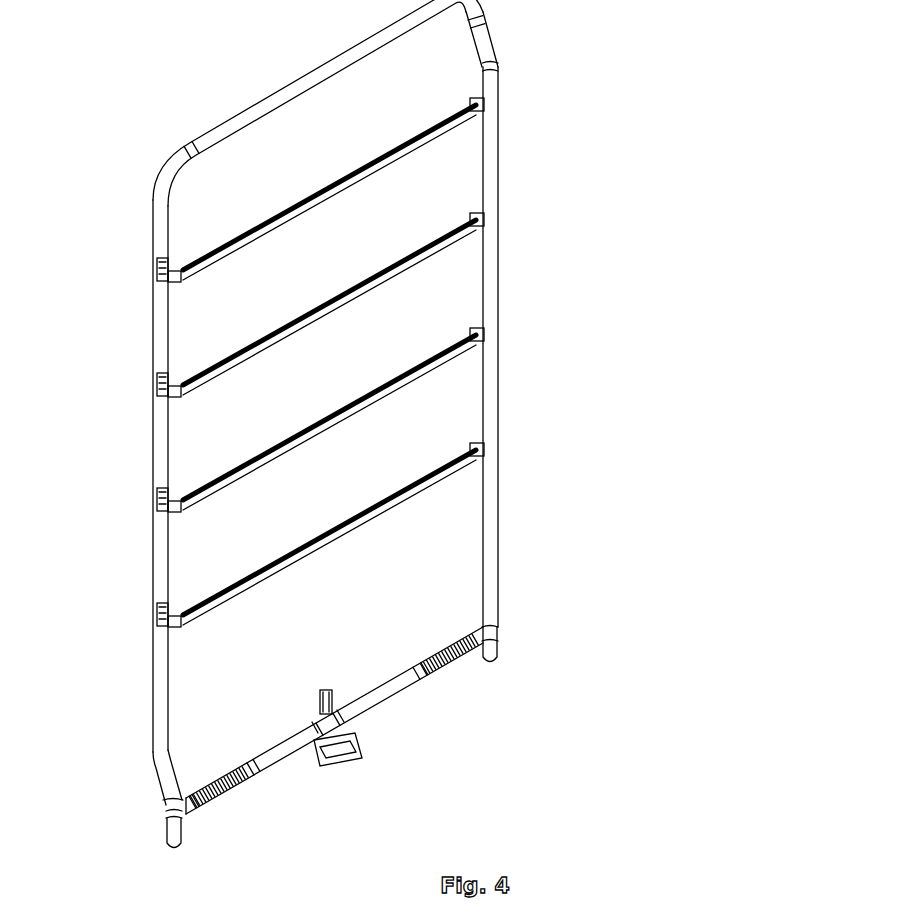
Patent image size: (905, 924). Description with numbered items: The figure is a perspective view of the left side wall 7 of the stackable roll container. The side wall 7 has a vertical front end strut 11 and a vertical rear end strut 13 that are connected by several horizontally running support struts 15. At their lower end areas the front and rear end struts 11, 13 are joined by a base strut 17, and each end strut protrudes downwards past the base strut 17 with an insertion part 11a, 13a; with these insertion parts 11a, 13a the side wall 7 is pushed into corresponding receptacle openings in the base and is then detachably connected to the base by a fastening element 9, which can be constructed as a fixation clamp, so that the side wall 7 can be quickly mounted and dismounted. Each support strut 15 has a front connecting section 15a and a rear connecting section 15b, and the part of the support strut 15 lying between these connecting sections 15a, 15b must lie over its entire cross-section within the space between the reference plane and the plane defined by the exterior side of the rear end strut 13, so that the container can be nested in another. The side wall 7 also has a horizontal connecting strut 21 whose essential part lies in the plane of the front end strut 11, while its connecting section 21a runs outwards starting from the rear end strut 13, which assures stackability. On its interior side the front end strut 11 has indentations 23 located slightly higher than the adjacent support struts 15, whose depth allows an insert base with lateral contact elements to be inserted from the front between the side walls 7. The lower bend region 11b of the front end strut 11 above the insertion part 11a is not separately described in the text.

The side wall 7 is at (524, 309).
The fastening element 9 is at (340, 763).
The vertical front end strut 11 is at (160, 315).
The insertion part 11a is at (168, 833).
The lower bend of left tube 11b is at (160, 773).
The vertical rear end strut 13 is at (483, 538).
The insertion part 13a is at (493, 665).
The support strut 15 is at (397, 152).
The front connecting section 15a is at (180, 628).
The rear connecting section 15b is at (477, 443).
The base strut 17 is at (395, 694).
The horizontal connecting strut 21 is at (247, 117).
The connecting section 21a is at (488, 44).
The indentation 23 is at (155, 266).